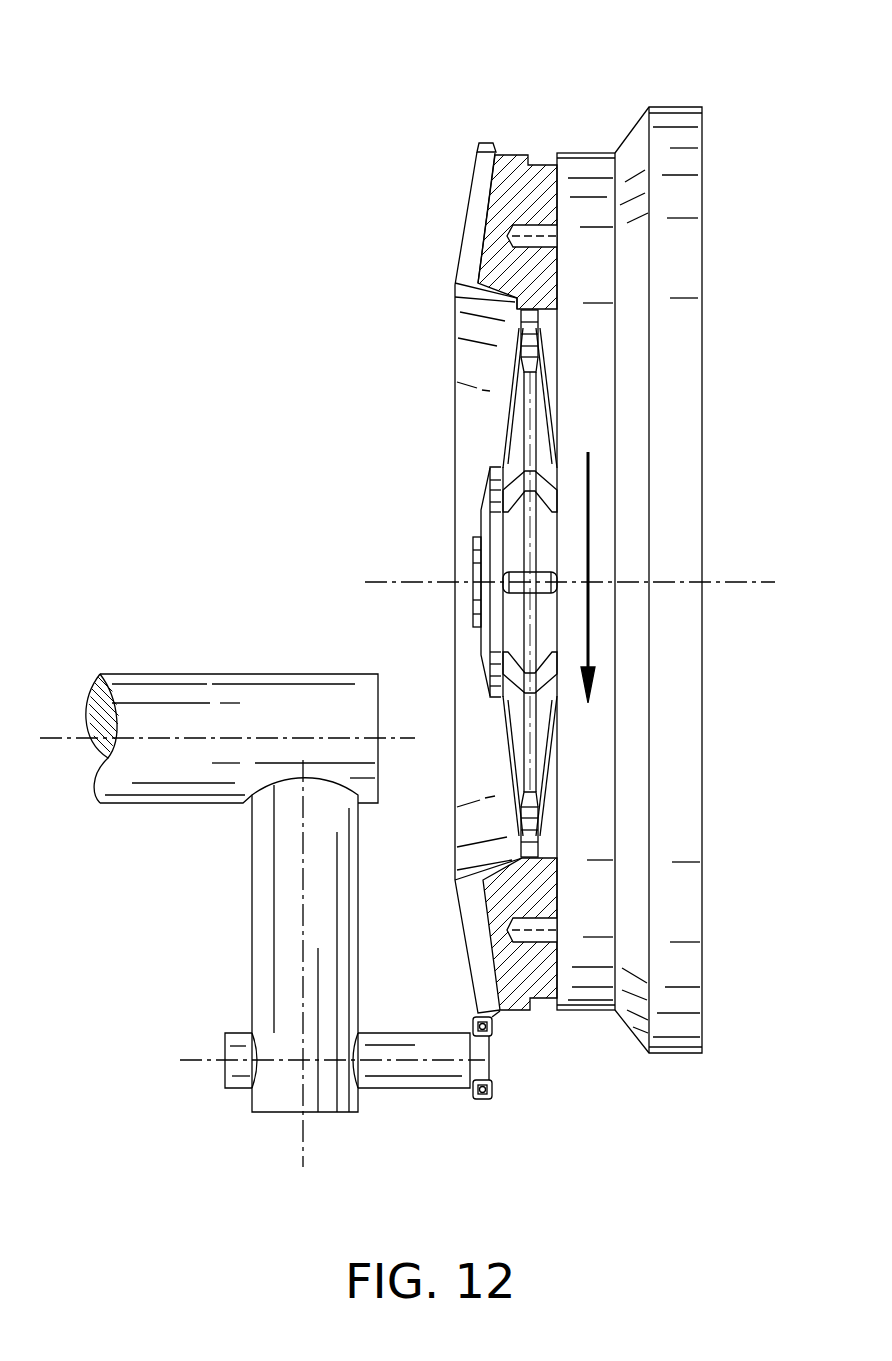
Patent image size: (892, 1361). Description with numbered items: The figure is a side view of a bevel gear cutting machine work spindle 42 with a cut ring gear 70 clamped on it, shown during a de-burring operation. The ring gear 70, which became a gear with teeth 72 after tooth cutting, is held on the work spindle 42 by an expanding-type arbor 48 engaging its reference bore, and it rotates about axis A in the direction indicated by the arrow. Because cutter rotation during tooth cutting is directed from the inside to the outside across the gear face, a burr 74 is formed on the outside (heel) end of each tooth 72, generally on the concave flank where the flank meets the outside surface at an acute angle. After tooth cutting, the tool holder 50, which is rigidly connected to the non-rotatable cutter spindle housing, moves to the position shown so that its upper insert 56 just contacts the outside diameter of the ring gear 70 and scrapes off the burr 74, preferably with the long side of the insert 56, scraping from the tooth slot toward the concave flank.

The work spindle 42 is at (680, 713).
The expanding-type arbor 48 is at (538, 333).
The tool holder 50 is at (200, 838).
The upper insert 56 is at (493, 1035).
The ring gear 70 is at (540, 1000).
The teeth 72 is at (470, 230).
The burr 74 is at (483, 140).
The axis A is at (766, 581).